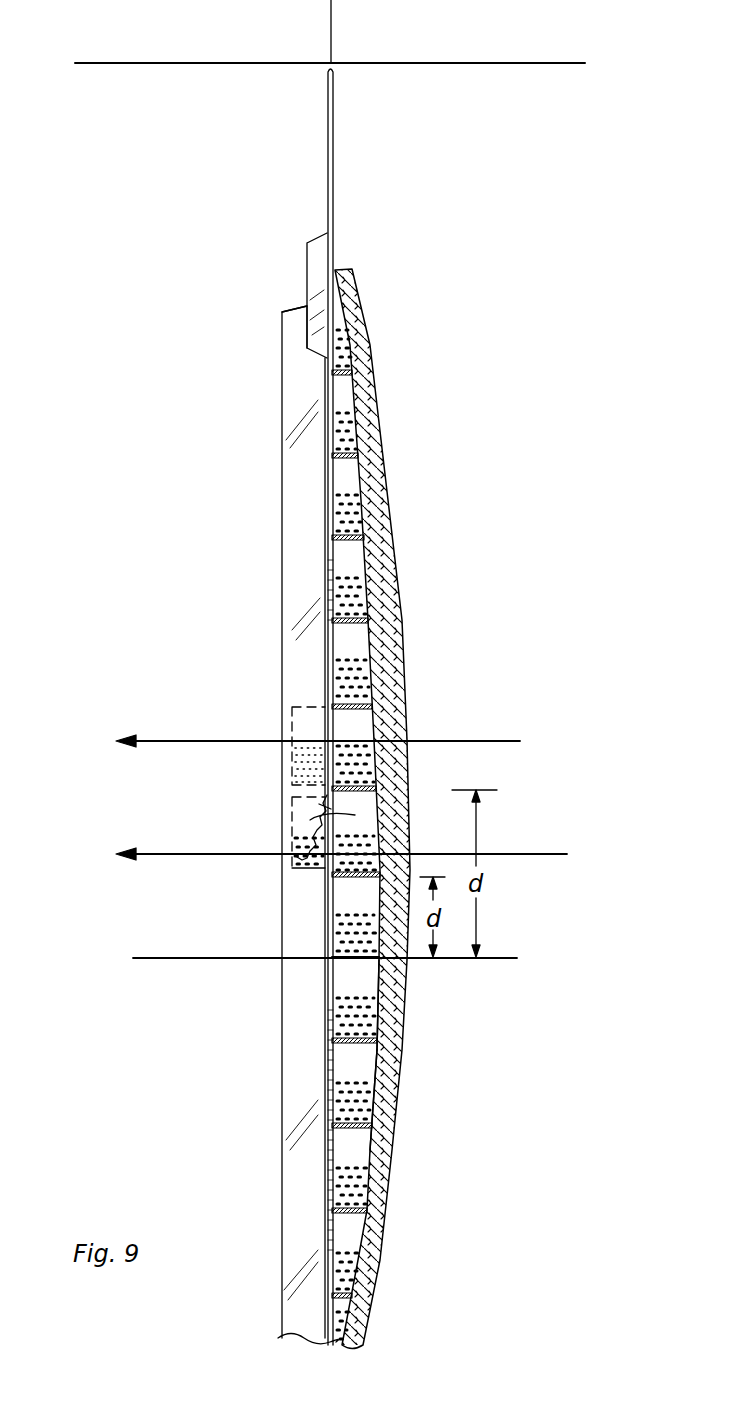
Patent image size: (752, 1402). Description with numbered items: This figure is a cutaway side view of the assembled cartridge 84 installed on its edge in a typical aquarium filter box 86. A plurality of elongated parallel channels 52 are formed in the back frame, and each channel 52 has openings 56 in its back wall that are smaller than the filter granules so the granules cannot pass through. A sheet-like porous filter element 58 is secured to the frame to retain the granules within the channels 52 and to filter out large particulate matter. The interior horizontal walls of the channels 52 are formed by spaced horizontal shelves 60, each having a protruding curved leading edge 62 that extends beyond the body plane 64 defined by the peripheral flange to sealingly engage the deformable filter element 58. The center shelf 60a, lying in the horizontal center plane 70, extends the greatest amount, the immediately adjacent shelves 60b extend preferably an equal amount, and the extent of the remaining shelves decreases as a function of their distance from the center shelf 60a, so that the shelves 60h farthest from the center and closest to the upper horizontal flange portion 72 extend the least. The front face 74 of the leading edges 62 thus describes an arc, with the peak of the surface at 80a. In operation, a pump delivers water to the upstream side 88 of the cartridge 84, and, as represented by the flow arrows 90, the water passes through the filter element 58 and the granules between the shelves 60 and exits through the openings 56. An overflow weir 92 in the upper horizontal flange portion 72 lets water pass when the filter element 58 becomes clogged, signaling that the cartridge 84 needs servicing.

The channels 52 is at (372, 590).
The openings 56 is at (280, 727).
The filter element 58 is at (372, 500).
The shelves 60 is at (385, 1205).
The center shelf 60a is at (336, 953).
The immediately adjacent shelves 60b is at (335, 893).
The farthest shelves 60h is at (328, 378).
The leading edge 62 is at (335, 965).
The body plane 64 is at (334, 15).
The horizontal center plane 70 is at (505, 960).
The upper horizontal flange portion 72 is at (334, 250).
The front face 74 is at (370, 372).
The peak of the surface 80a is at (410, 990).
The cartridge 84 is at (365, 1090).
The filter box 86 is at (208, 56).
The upstream side 88 is at (691, 757).
The flow arrows 90 is at (462, 741).
The overflow weir 92 is at (288, 134).